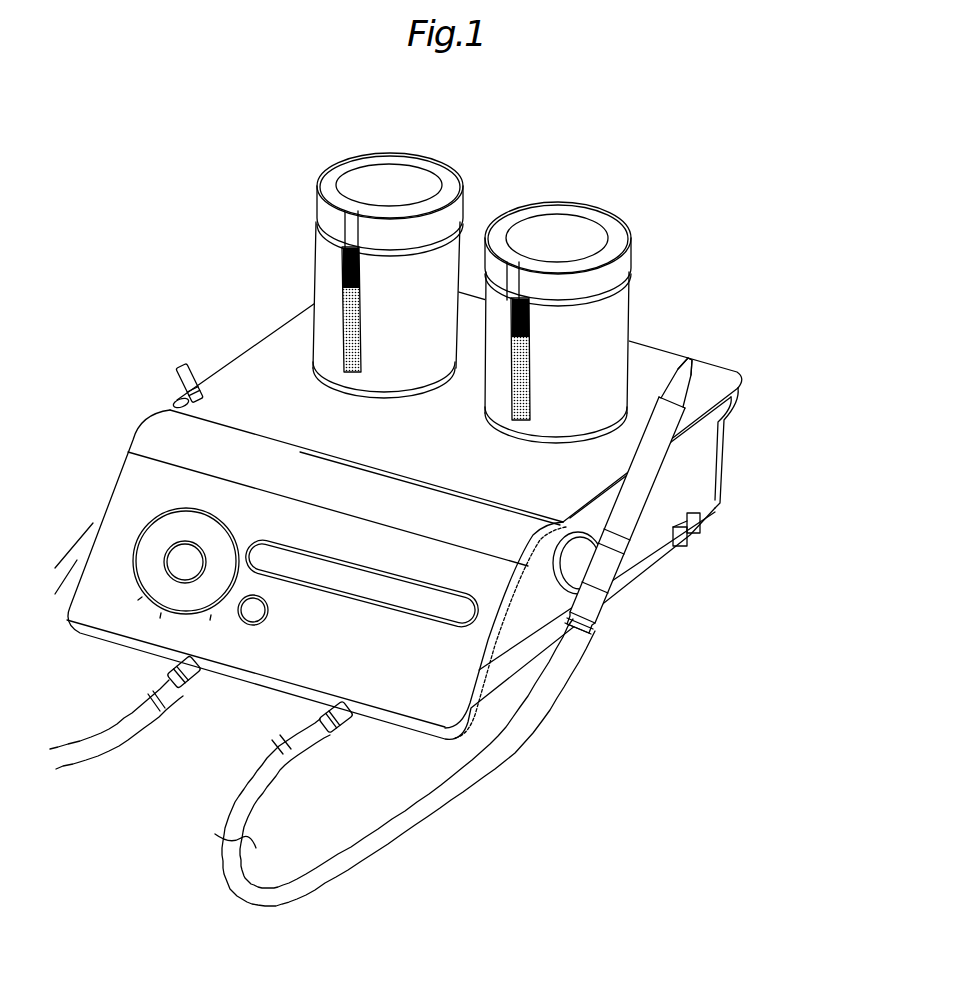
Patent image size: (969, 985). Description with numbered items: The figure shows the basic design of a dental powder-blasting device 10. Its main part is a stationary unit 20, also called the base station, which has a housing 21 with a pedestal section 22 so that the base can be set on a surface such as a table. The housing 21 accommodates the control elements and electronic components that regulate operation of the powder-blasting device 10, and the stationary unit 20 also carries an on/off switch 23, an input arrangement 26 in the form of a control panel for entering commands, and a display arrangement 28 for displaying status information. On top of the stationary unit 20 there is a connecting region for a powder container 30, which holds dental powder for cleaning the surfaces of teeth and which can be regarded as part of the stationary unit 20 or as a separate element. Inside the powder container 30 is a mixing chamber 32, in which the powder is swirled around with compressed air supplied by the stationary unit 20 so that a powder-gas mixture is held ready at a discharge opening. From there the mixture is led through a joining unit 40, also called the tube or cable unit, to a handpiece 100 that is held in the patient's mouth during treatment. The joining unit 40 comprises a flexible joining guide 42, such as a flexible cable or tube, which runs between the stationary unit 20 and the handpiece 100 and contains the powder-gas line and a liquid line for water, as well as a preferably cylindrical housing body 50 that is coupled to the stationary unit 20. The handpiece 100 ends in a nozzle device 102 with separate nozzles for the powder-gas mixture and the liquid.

The powder-blasting device 10 is at (180, 182).
The stationary unit 20 is at (257, 367).
The housing 21 is at (657, 360).
The pedestal section 22 is at (630, 573).
The on/off switch 23 is at (707, 523).
The input arrangement 26 is at (160, 543).
The display arrangement 28 is at (380, 593).
The powder container 30 is at (433, 167).
The mixing chamber 32 is at (383, 171).
The joining unit 40 is at (510, 790).
The flexible joining guide 42 is at (423, 827).
The housing body 50 is at (317, 710).
The handpiece 100 is at (630, 513).
The nozzle device 102 is at (690, 359).